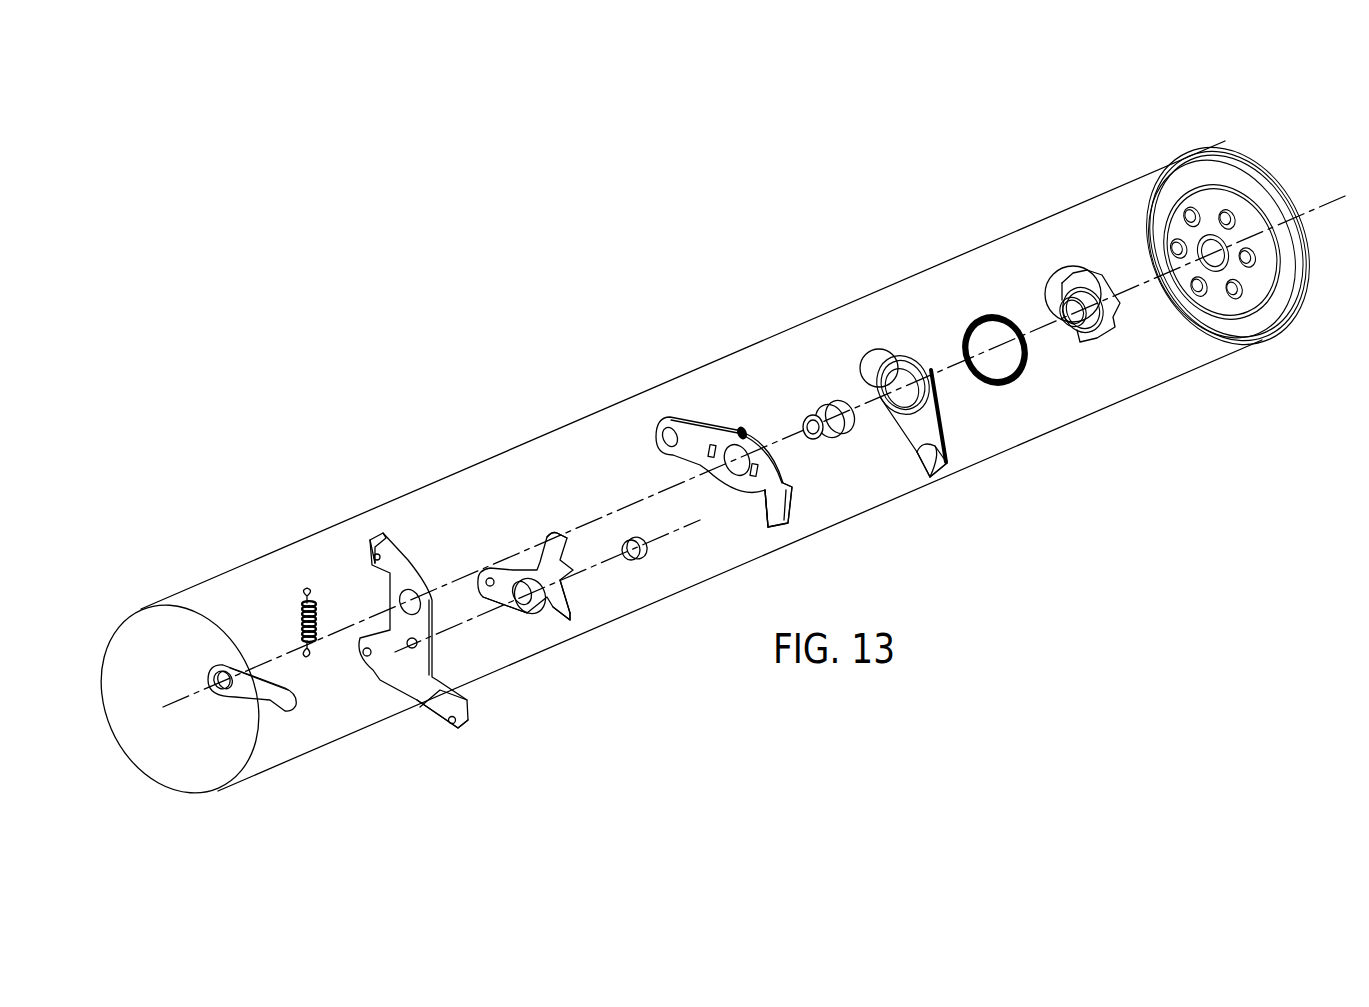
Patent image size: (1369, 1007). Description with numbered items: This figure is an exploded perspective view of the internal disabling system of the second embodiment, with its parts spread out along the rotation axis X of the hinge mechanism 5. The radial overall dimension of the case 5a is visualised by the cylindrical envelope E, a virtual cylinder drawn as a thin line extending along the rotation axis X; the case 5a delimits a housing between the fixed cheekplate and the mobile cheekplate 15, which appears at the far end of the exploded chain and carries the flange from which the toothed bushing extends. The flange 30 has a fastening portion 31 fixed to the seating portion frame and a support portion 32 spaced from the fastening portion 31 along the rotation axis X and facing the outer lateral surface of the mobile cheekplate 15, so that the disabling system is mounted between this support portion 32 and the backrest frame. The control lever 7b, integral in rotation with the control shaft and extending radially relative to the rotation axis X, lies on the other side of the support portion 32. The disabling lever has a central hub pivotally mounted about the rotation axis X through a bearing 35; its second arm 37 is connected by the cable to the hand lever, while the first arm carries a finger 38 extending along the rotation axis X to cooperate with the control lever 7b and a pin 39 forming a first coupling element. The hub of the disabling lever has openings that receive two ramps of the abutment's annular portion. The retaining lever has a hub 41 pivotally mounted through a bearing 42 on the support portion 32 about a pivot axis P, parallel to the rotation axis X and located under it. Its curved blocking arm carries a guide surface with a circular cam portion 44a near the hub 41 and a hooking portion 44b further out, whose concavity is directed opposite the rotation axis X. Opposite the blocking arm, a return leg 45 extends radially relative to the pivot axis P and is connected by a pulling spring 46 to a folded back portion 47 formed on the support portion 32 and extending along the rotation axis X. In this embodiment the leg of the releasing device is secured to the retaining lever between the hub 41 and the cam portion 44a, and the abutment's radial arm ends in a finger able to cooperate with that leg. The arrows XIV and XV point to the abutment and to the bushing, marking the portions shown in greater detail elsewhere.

The wheel 5 is at (1232, 244).
The case 5a is at (1315, 300).
The mobile cheekplate 15 is at (1218, 196).
The control lever 7b is at (278, 700).
The flange 30 is at (440, 655).
The fastening portion 31 is at (462, 722).
The support portion 32 is at (418, 562).
The bearing 35 is at (637, 560).
The second arm 37 is at (663, 420).
The finger 38 is at (783, 522).
The pin 39 is at (764, 497).
The hub 41 is at (520, 612).
The bearing 42 is at (823, 407).
The cam portion 44a is at (574, 576).
The hooking portion 44b is at (568, 545).
The return leg 45 is at (487, 570).
The pulling spring 46 is at (300, 623).
The folded back portion 47 is at (375, 538).
The cylindrical envelope E is at (513, 440).
The pivot axis P is at (666, 535).
The rotation axis X is at (1328, 205).
The section XIV is at (895, 342).
The section XV is at (1091, 265).